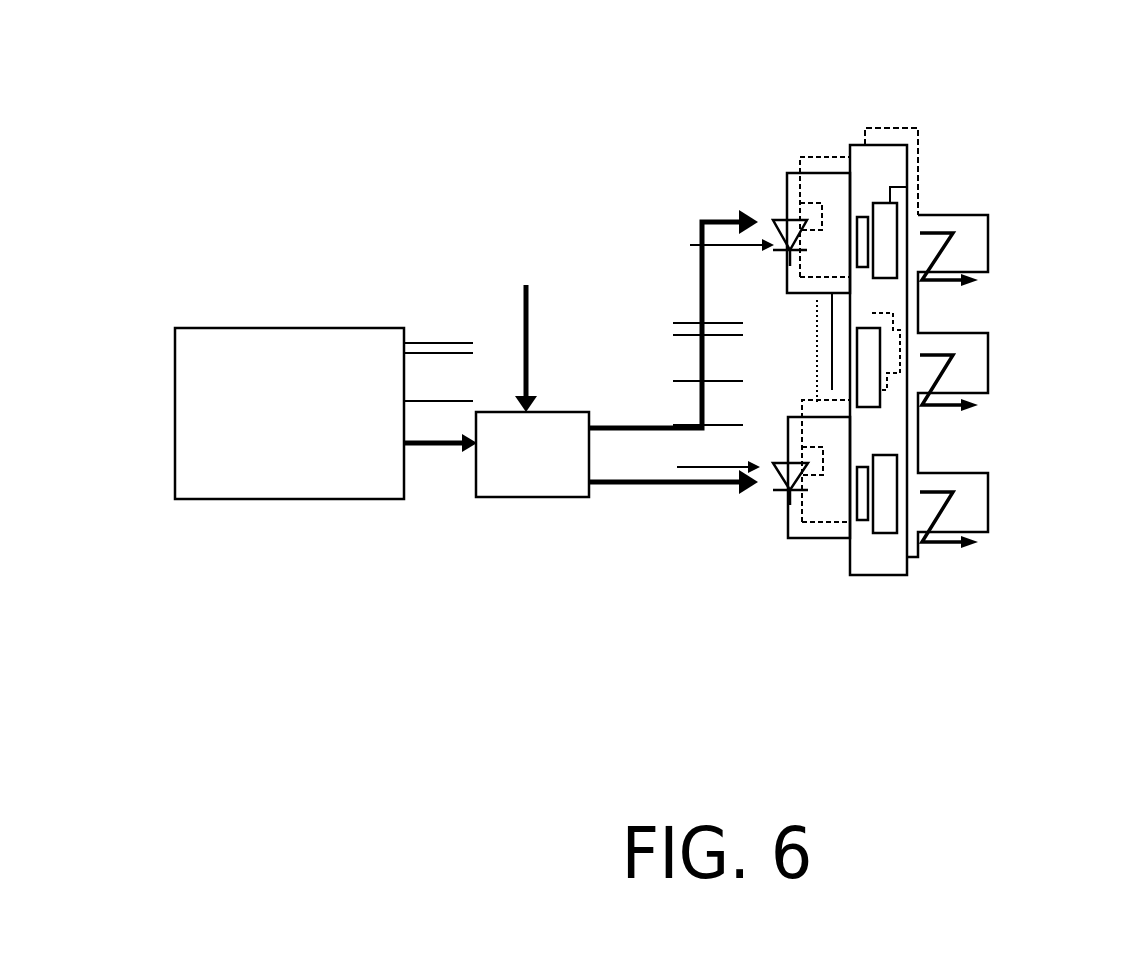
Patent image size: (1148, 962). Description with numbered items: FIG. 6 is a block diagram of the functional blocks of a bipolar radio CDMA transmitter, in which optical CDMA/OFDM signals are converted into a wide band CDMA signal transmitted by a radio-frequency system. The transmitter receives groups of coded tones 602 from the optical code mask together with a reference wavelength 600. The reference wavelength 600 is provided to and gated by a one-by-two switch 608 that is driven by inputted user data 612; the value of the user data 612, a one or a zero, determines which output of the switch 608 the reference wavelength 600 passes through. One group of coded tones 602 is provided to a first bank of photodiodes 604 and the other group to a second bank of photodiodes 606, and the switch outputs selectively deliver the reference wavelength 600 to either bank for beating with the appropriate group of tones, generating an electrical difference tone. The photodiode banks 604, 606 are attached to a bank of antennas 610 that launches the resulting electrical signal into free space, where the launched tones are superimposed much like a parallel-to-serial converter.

The coded tones 602 is at (432, 282).
The user data 612 is at (503, 195).
The 1×2 switch 608 is at (560, 497).
The reference wavelength 600 is at (648, 433).
The first bank of photodiodes 604 is at (818, 158).
The second bank of photodiodes 606 is at (805, 503).
The bank of antennas 610 is at (893, 578).